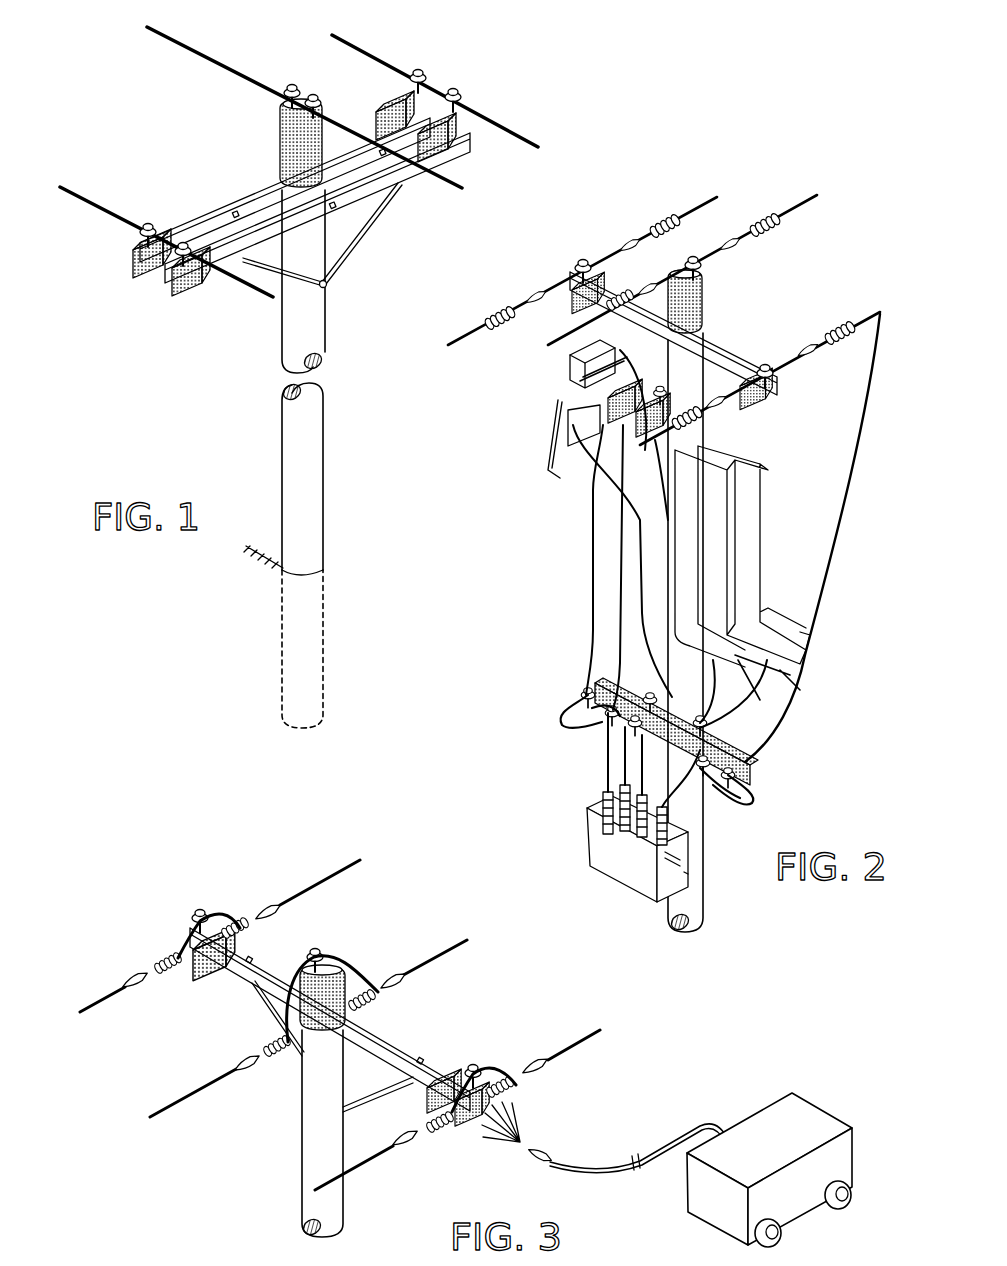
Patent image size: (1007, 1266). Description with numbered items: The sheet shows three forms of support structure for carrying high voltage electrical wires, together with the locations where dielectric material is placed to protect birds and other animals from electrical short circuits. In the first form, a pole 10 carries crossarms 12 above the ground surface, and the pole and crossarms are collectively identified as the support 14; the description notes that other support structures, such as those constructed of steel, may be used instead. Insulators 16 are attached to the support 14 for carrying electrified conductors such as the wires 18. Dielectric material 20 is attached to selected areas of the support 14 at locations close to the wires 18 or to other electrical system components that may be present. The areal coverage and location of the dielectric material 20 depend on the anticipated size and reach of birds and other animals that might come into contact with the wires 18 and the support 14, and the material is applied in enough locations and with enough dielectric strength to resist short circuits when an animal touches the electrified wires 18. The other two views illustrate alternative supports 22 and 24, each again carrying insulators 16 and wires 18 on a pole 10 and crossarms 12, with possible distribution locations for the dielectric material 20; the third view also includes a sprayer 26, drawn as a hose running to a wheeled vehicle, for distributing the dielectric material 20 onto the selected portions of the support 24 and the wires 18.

In FIG. 1, the pole 10 is at (325, 326).
In FIG. 2, the pole 10 is at (704, 919).
In FIG. 3, the pole 10 is at (303, 1160).
In FIG. 1, the crossarms 12 is at (245, 195).
In FIG. 2, the crossarms 12 is at (726, 362).
In FIG. 3, the crossarms 12 is at (253, 998).
In FIG. 1, the support 14 is at (200, 342).
In FIG. 1, the insulators 16 is at (284, 93).
In FIG. 2, the insulators 16 is at (595, 273).
In FIG. 3, the insulators 16 is at (201, 915).
In FIG. 1, the wires 18 is at (197, 57).
In FIG. 2, the wires 18 is at (583, 260).
In FIG. 3, the wires 18 is at (300, 893).
In FIG. 1, the dielectric material 20 is at (281, 140).
In FIG. 2, the dielectric material 20 is at (585, 306).
In FIG. 3, the dielectric material 20 is at (346, 977).
In FIG. 2, the support 22 is at (549, 452).
In FIG. 3, the support 24 is at (440, 991).
In FIG. 3, the wash hose / water source vehicle 26 is at (588, 1172).